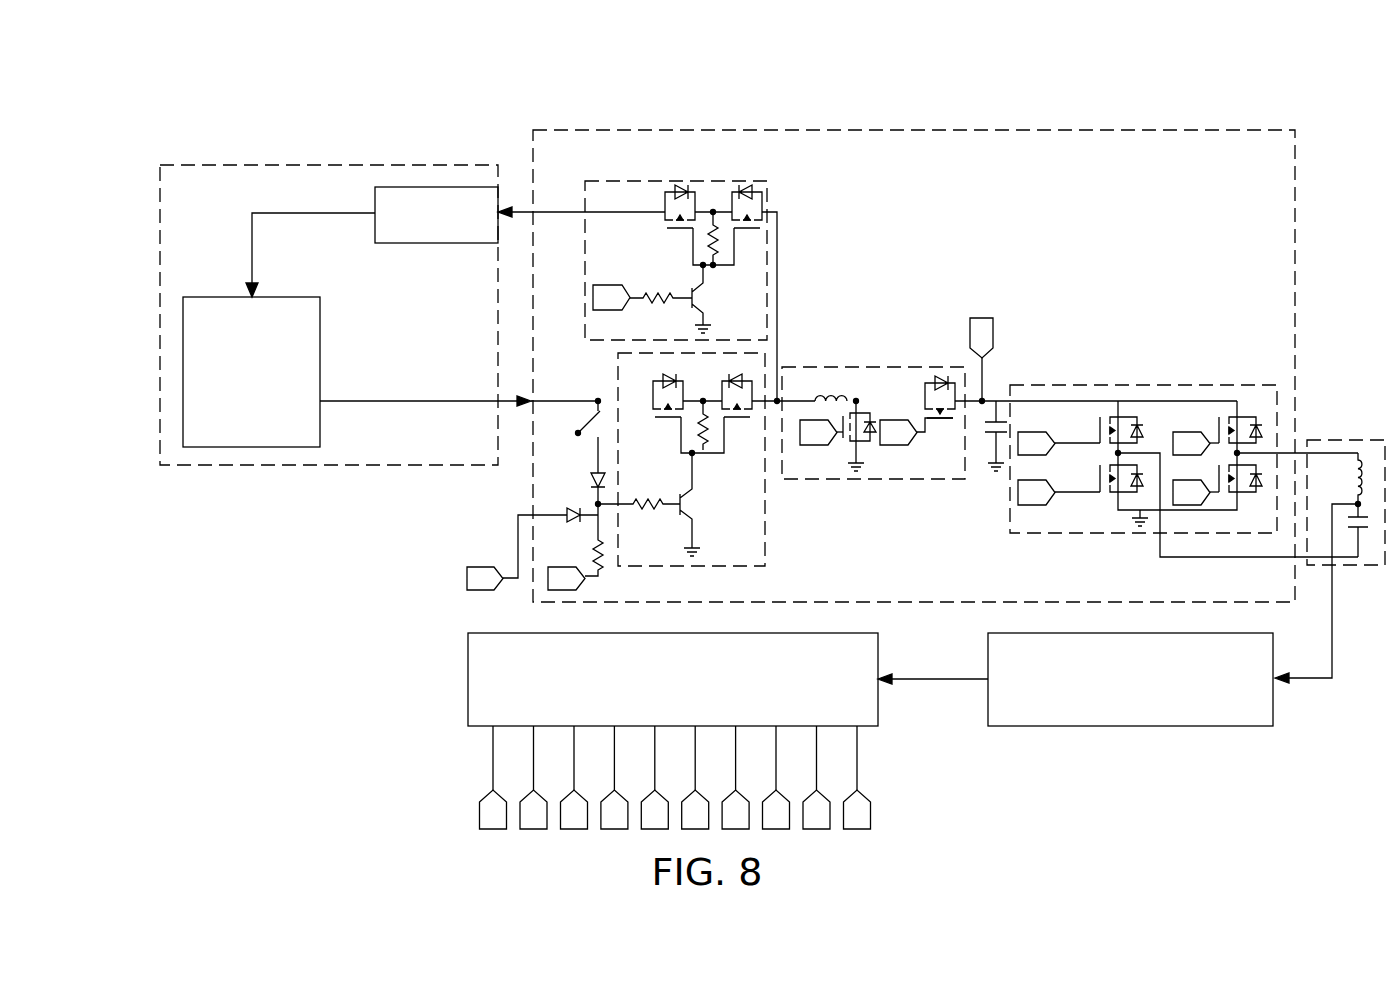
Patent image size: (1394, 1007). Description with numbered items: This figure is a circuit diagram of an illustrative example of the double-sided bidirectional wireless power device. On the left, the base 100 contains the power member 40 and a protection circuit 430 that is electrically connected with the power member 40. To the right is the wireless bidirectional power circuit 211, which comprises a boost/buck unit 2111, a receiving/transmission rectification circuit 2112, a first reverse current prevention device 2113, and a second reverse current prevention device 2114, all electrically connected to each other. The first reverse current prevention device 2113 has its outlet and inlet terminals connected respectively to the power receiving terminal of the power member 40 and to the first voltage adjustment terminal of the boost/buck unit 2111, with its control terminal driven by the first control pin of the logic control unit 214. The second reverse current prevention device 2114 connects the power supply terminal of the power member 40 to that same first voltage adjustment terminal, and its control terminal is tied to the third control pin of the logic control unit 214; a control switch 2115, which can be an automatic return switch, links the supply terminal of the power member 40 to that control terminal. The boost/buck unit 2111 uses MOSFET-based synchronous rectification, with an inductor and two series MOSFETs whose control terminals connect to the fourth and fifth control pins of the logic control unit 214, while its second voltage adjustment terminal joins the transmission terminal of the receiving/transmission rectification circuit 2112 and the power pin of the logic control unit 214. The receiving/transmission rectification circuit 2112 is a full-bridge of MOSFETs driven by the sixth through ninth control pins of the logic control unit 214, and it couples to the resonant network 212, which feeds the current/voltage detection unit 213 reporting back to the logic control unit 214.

The base 100 is at (278, 164).
The protection circuit 430 is at (443, 187).
The power member 40 is at (183, 368).
The wireless bidirectional power circuit 211 is at (1057, 130).
The first reverse current prevention device 2113 is at (622, 181).
The second reverse current prevention device 2114 is at (767, 539).
The control switch 2115 is at (597, 437).
The boost/buck unit 2111 is at (857, 367).
The receiving/transmission rectification circuit 2112 is at (1115, 385).
The resonant circuit 212 is at (1345, 440).
The logic control unit 214 is at (468, 678).
The current/voltage detection unit 213 is at (1130, 727).